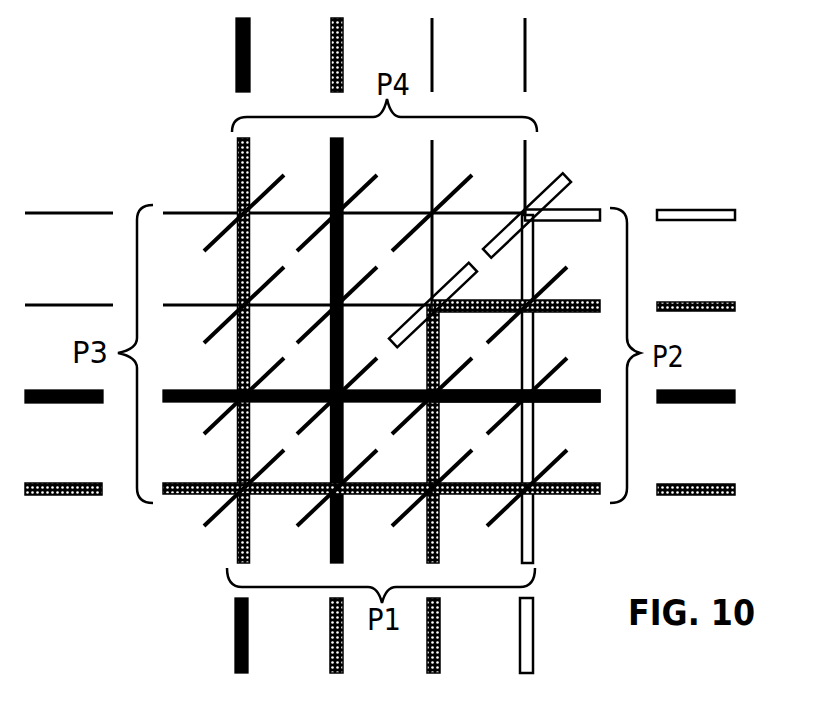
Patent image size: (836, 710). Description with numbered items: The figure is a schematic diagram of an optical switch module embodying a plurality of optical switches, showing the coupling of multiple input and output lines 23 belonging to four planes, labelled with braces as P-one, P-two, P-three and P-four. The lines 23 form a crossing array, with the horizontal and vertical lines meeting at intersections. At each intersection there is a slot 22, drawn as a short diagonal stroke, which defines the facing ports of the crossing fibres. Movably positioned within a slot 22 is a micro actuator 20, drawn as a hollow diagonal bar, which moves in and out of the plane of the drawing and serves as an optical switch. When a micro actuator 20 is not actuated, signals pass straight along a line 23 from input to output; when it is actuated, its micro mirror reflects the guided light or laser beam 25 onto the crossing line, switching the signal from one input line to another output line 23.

The micro actuator 20 is at (543, 177).
The slot 22 is at (470, 178).
The input and output lines 23 is at (695, 220).
The guided light beams 25 is at (566, 313).